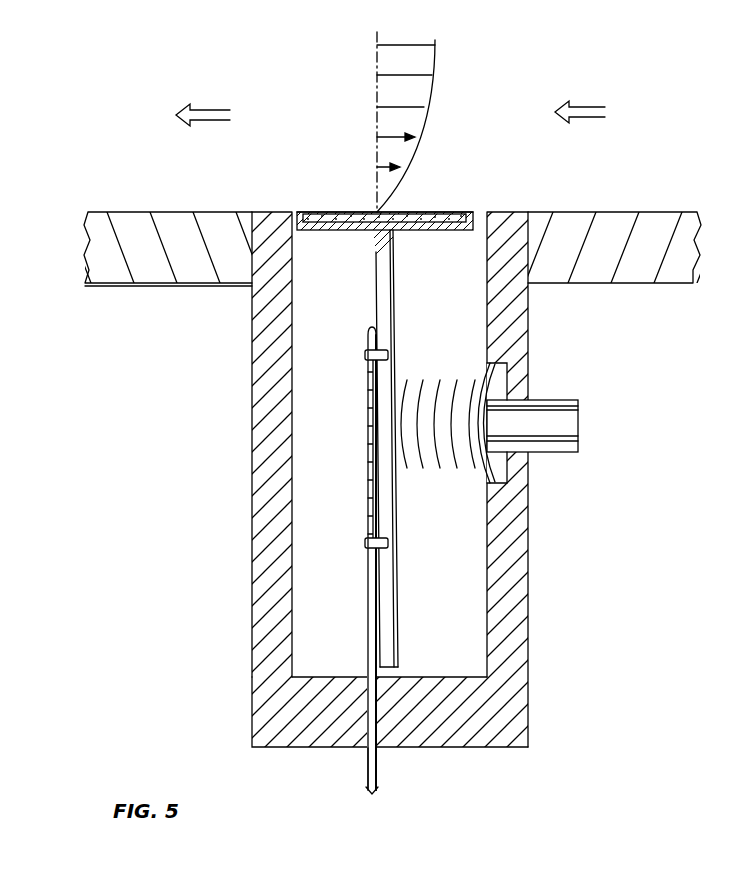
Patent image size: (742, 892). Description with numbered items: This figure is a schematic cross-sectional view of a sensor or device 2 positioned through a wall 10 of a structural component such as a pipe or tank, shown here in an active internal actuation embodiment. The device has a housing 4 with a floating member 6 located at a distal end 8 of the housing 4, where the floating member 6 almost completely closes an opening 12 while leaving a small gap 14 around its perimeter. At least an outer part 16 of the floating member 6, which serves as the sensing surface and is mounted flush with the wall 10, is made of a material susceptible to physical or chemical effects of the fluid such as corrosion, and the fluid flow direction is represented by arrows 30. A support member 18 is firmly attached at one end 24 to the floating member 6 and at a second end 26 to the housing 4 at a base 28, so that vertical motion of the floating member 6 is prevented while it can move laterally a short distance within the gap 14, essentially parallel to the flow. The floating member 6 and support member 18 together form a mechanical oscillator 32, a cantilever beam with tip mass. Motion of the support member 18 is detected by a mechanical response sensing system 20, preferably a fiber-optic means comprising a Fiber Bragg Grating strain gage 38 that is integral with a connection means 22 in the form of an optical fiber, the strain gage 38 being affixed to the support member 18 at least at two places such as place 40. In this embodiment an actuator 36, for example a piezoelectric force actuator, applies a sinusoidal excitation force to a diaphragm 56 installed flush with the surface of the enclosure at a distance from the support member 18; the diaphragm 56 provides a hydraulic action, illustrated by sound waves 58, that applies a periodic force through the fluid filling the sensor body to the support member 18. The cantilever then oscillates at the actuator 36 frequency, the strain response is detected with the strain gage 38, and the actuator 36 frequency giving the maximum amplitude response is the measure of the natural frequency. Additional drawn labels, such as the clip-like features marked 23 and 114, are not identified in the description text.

The sensor or device 2 is at (202, 634).
The housing 4 is at (252, 432).
The floating member 6 is at (323, 232).
The distal end 8 is at (273, 212).
The wall 10 is at (177, 212).
The opening 12 is at (476, 242).
The gap 14 is at (296, 212).
The outer part (sensing surface) 16 is at (347, 212).
The support member 18 is at (393, 298).
The mechanical response sensing system 20 is at (363, 501).
The connection means 22 is at (367, 781).
The clip 23 is at (424, 534).
The one end (of support member) 24 is at (393, 233).
The second end (of support member) 26 is at (398, 670).
The base 28 is at (513, 715).
The arrows (flow direction) 30 is at (377, 88).
The mechanical oscillator 32 is at (432, 206).
The actuator 36 is at (558, 453).
The Fiber Bragg Grating strain gage 38 is at (367, 425).
The attachment place 40 is at (365, 355).
The diaphragm 56 is at (500, 390).
The sound waves 58 is at (456, 393).
The clip 114 is at (392, 544).